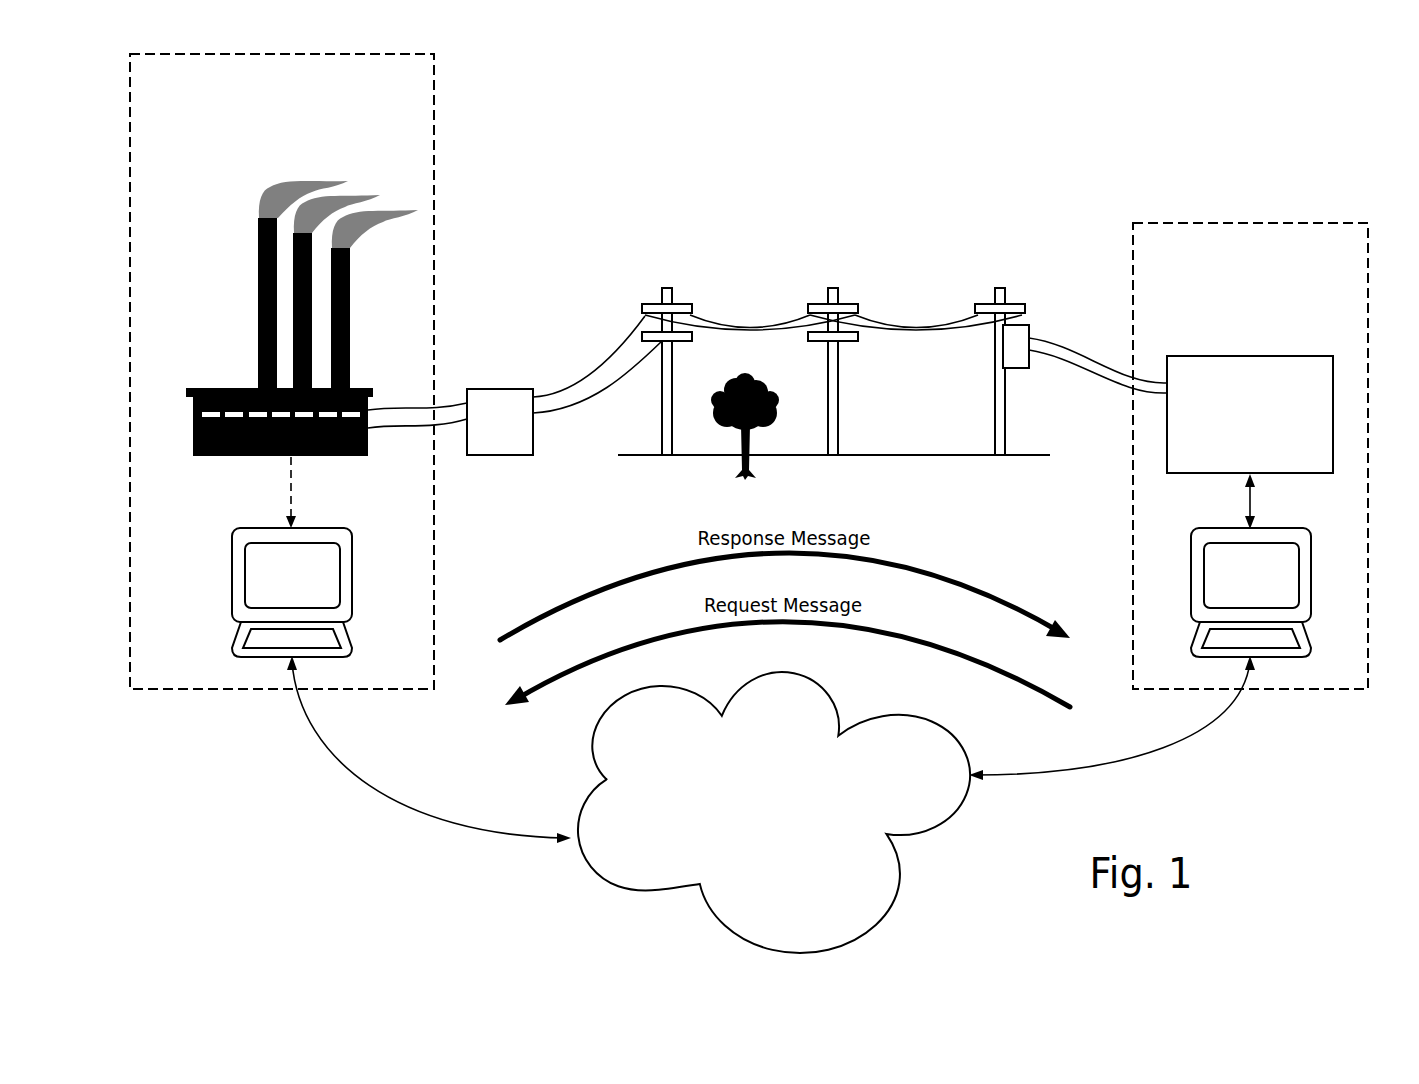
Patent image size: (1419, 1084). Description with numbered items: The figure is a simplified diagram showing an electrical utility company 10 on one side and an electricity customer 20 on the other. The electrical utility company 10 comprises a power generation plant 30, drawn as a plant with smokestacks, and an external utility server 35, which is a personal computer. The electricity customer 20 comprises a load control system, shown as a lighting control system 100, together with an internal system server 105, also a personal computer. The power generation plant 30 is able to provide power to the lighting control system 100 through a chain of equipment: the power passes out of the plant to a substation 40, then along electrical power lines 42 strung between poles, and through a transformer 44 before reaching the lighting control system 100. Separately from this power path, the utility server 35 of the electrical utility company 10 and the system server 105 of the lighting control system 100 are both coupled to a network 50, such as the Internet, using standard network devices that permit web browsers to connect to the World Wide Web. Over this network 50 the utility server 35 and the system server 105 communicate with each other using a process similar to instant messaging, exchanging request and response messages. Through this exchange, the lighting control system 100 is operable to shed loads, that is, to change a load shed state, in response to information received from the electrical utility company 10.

The electrical utility company 10 is at (434, 155).
The electricity customer 20 is at (1266, 222).
The power generation plant 30 is at (216, 388).
The external utility server 35 is at (303, 586).
The substation 40 is at (488, 433).
The electrical power lines 42 is at (766, 285).
The transformer 44 is at (1032, 368).
The network 50 is at (825, 900).
The lighting control system 100 is at (1270, 440).
The internal system server 105 is at (1268, 586).